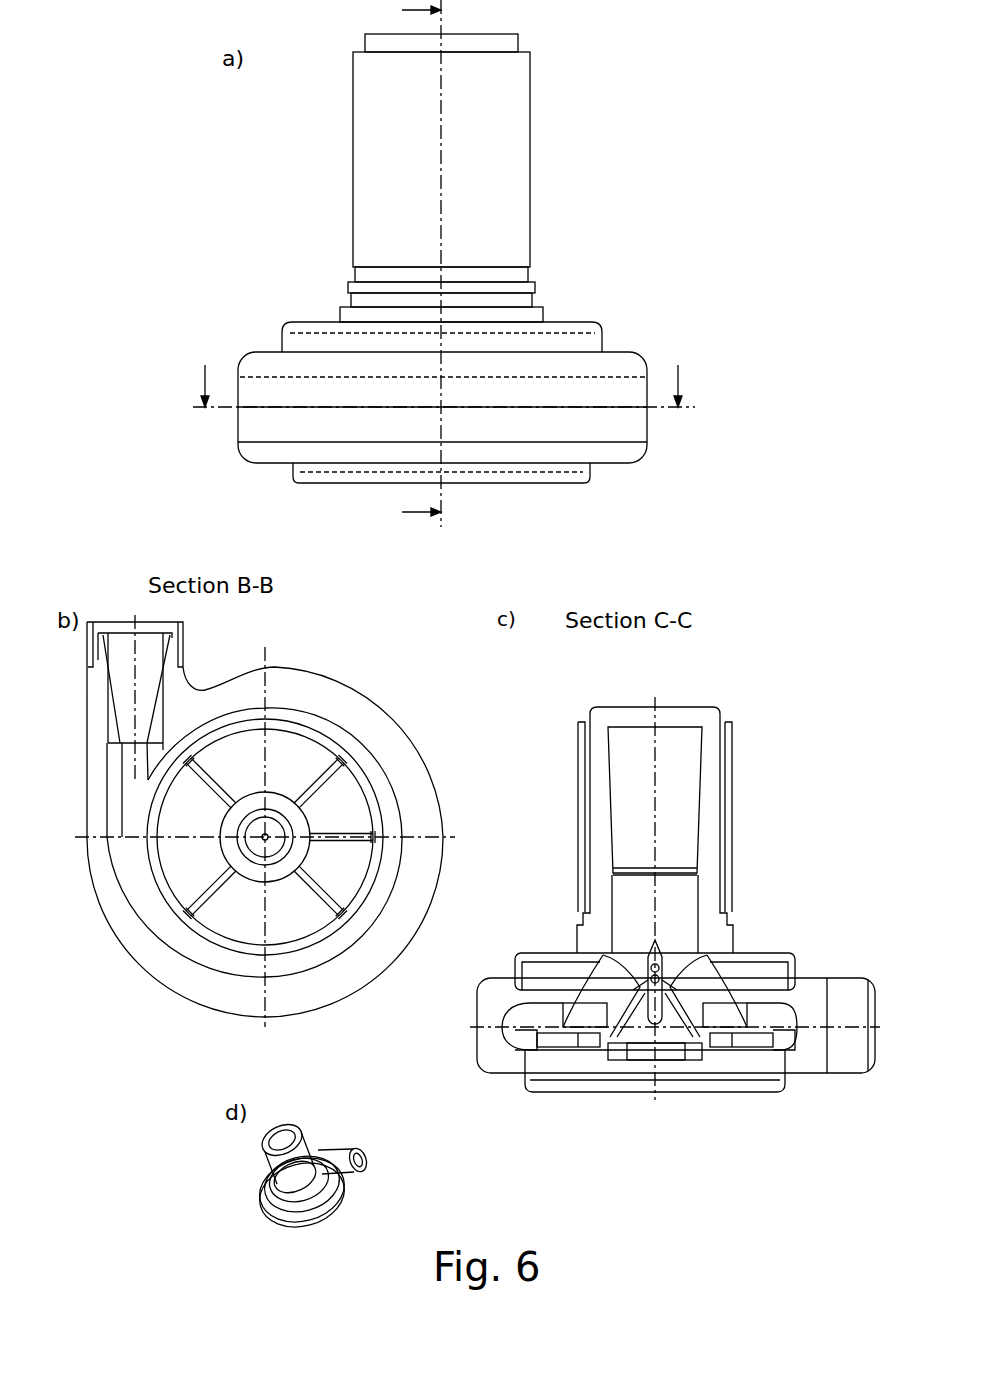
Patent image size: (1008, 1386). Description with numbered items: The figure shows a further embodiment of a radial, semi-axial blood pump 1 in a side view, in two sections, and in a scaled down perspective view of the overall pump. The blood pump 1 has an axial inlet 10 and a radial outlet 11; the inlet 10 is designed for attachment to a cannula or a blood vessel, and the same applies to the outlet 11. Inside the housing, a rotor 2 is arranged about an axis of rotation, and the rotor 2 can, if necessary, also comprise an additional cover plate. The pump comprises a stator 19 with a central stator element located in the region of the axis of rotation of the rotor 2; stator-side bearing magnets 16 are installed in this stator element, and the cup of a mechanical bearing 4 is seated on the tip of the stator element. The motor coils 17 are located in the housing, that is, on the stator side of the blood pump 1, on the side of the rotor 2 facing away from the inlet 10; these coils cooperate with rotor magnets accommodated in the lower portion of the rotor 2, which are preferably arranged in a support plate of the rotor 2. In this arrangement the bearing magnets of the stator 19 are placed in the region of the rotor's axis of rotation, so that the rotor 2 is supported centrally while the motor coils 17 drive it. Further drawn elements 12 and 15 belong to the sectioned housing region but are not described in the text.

The blood pump 1 is at (668, 465).
The rotor 2 is at (188, 868).
The mechanical bearing 4 is at (663, 977).
The inlet 10 is at (682, 785).
The outlet 11 is at (128, 710).
The housing shell 12 is at (528, 1055).
The stator coil 15 is at (615, 1050).
The bearing magnets 16 is at (597, 1048).
The motor coils 17 is at (747, 1067).
The stator 19 is at (670, 1078).